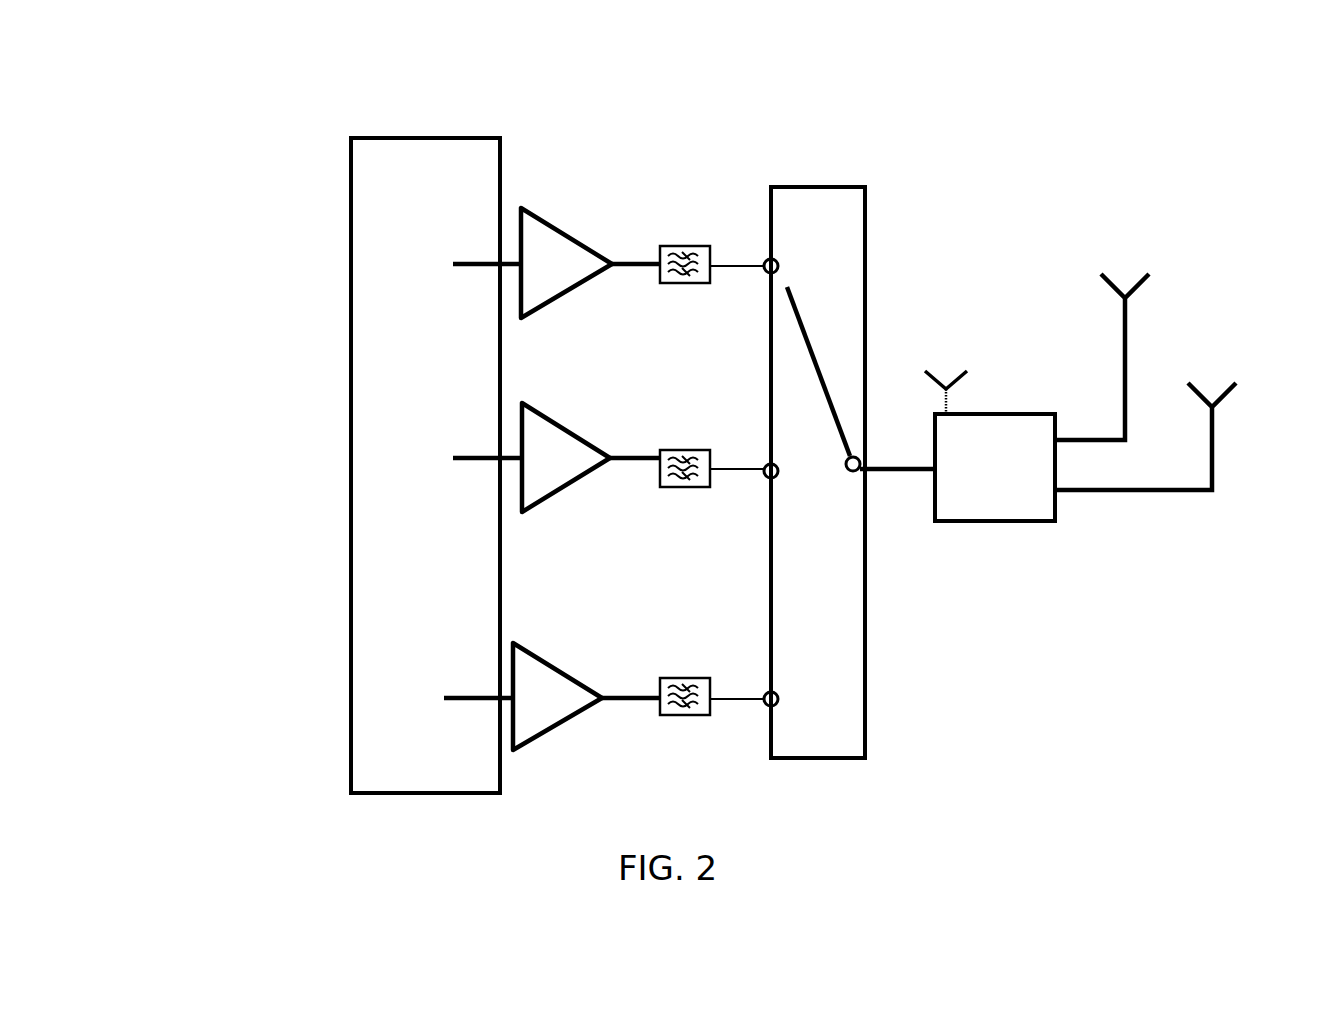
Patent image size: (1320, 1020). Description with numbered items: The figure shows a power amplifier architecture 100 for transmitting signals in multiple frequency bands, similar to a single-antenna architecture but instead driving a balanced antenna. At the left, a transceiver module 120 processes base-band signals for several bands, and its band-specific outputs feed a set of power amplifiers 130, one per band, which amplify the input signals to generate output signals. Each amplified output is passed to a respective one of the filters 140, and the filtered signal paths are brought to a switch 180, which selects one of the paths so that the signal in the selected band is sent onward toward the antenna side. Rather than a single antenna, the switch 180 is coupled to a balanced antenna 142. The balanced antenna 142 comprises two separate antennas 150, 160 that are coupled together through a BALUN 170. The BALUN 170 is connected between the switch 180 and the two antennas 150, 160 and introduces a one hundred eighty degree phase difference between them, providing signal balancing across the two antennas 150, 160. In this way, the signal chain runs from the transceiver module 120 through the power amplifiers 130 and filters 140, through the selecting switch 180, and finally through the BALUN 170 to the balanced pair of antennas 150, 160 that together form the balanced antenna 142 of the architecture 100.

The power amplifier architecture 100 is at (238, 96).
The transceiver / baseband module 120 is at (348, 671).
The power amplifiers 130 is at (553, 124).
The filters 140 is at (840, 447).
The balanced antenna 142 is at (1089, 353).
The antenna 150 is at (1063, 357).
The antenna 160 is at (1155, 474).
The BALUN 170 is at (991, 540).
The switch 180 is at (868, 700).